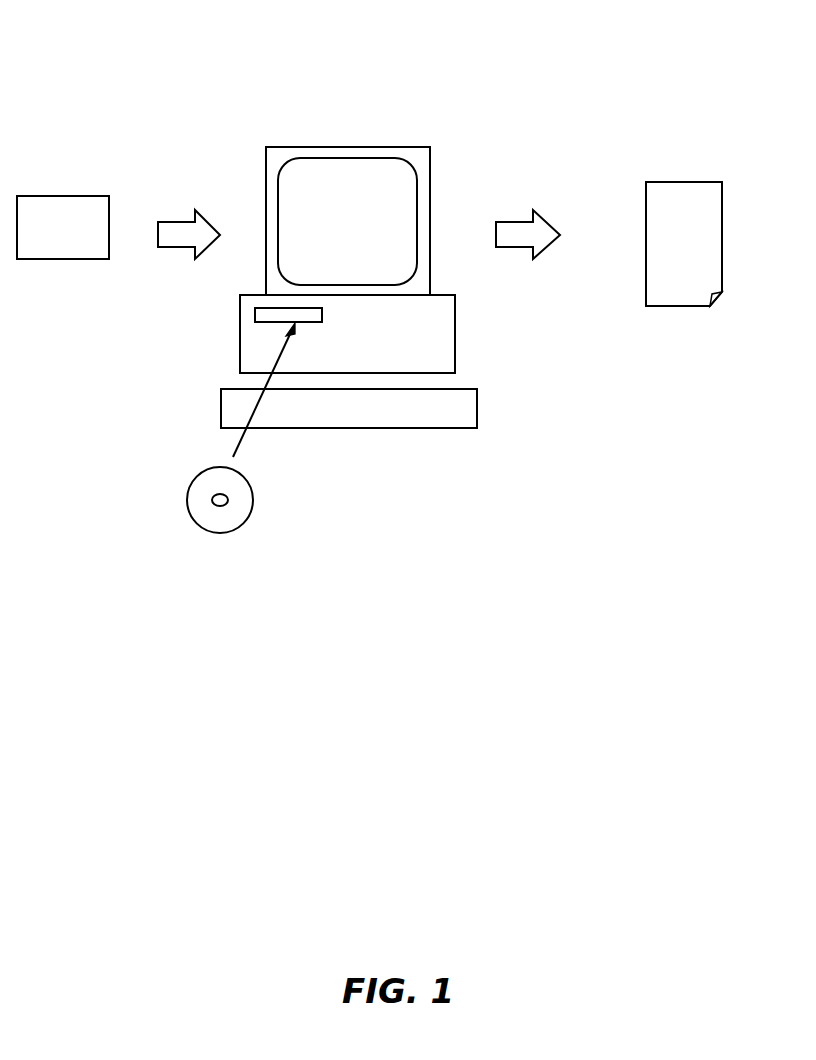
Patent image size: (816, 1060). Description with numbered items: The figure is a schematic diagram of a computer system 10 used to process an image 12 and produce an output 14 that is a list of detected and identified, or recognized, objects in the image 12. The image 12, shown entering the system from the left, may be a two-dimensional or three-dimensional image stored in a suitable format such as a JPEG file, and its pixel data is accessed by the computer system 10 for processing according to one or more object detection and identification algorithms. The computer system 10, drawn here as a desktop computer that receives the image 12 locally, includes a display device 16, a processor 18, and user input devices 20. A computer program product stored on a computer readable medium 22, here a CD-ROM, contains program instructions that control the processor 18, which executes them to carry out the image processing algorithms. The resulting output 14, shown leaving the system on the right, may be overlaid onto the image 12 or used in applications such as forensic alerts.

The computer system 10 is at (272, 111).
The image 12 is at (57, 196).
The output 14 is at (685, 182).
The display device 16 is at (430, 210).
The processor 18 is at (455, 322).
The user input devices 20 is at (477, 410).
The computer readable medium 22 is at (186, 500).